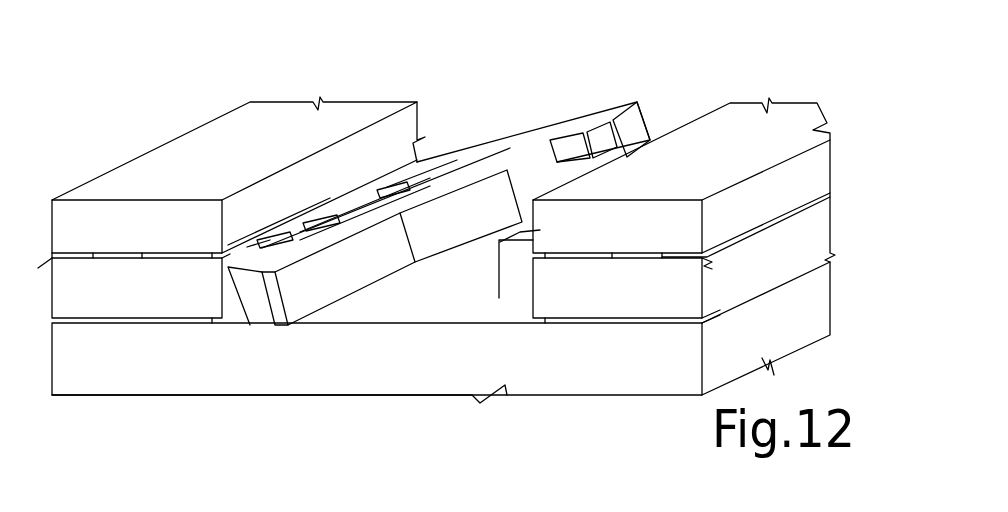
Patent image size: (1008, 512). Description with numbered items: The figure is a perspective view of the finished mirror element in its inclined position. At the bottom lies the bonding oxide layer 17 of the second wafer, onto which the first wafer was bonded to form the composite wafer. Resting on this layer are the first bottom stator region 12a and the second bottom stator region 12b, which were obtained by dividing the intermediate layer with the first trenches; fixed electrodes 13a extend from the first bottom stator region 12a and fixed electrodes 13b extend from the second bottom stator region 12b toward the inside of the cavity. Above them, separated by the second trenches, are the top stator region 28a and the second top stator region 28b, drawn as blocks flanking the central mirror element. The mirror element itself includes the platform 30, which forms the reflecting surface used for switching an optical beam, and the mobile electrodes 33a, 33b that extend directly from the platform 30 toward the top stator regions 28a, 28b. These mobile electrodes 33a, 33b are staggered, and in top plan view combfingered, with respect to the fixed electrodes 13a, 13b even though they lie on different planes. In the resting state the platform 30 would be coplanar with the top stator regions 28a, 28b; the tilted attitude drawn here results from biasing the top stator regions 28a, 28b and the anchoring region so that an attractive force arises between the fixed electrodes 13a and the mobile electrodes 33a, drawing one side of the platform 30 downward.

The first bottom stator region 12a is at (162, 297).
The second bottom stator region 12b is at (637, 309).
The fixed electrodes 13a is at (337, 190).
The fixed electrodes 13b is at (520, 235).
The bonding oxide layer 17 is at (173, 320).
The top stator region 28a is at (236, 166).
The second top stator region 28b is at (720, 172).
The platform 30 is at (485, 157).
The mobile electrodes 33a is at (247, 247).
The mobile electrodes 33b is at (597, 113).